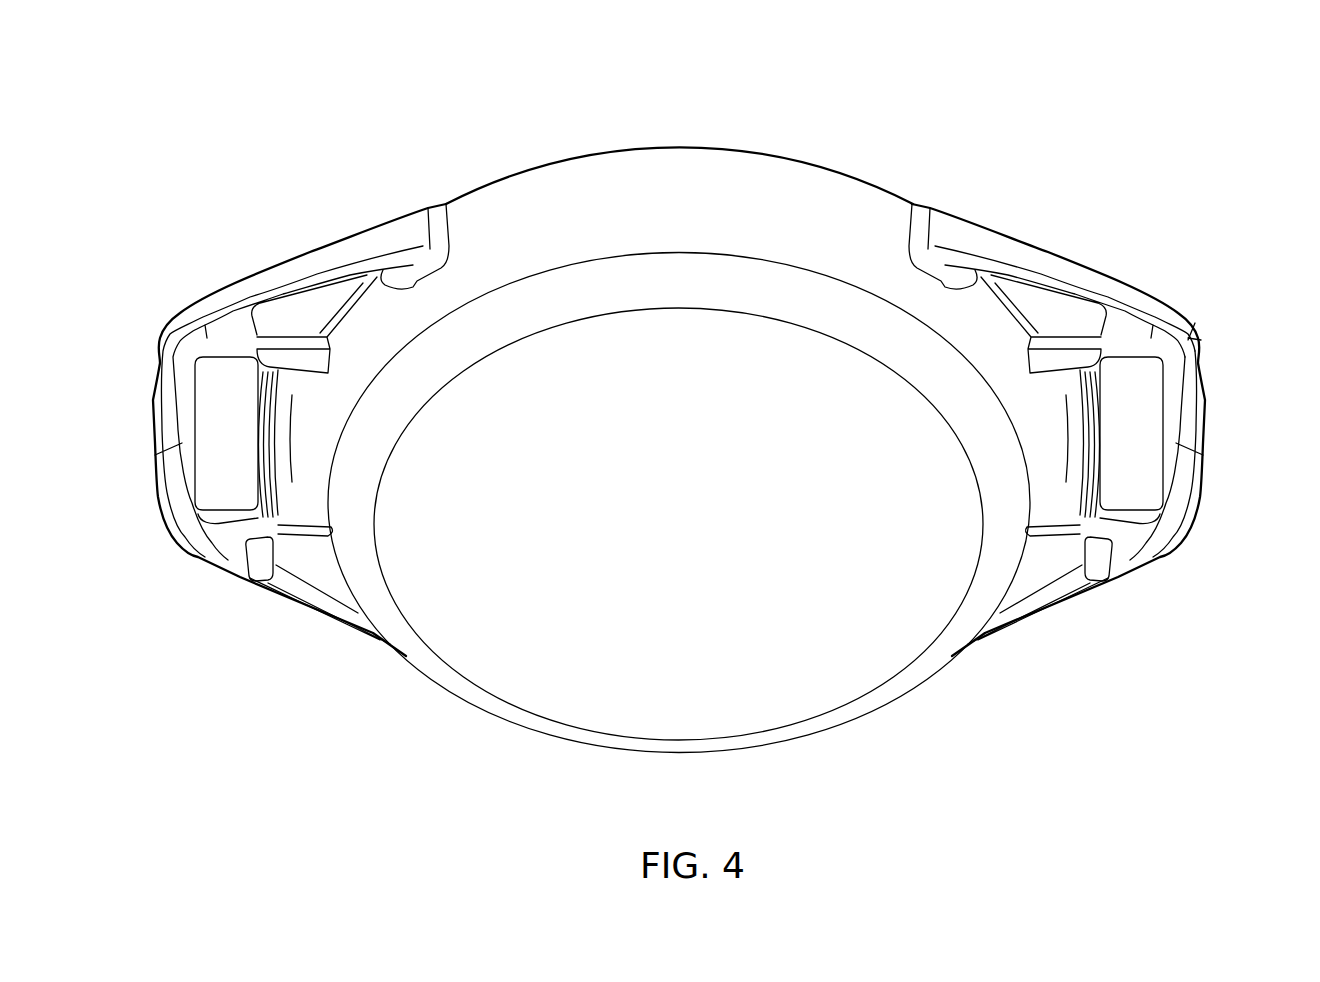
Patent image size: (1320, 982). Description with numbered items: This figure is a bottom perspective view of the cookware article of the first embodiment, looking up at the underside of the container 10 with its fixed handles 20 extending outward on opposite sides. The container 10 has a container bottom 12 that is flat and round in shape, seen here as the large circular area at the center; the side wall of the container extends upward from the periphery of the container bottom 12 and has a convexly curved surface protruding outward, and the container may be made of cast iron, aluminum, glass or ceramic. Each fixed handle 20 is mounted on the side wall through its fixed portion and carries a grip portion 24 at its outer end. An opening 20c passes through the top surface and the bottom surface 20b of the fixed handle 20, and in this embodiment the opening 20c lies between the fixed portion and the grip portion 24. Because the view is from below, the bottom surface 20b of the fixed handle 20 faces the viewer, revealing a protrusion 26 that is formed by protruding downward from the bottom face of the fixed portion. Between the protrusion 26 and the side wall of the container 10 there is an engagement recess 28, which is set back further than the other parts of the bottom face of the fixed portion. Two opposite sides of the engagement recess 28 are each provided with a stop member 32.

The container 10 is at (770, 149).
The container bottom 12 is at (540, 552).
The fixed handle 20 is at (1120, 277).
The grip portion 24 is at (1187, 462).
The protrusion 26 is at (1147, 470).
The engagement recess 28 is at (1087, 400).
The stop member 32 is at (1061, 350).
The bottom surface 20b is at (1093, 518).
The opening 20c is at (1202, 485).